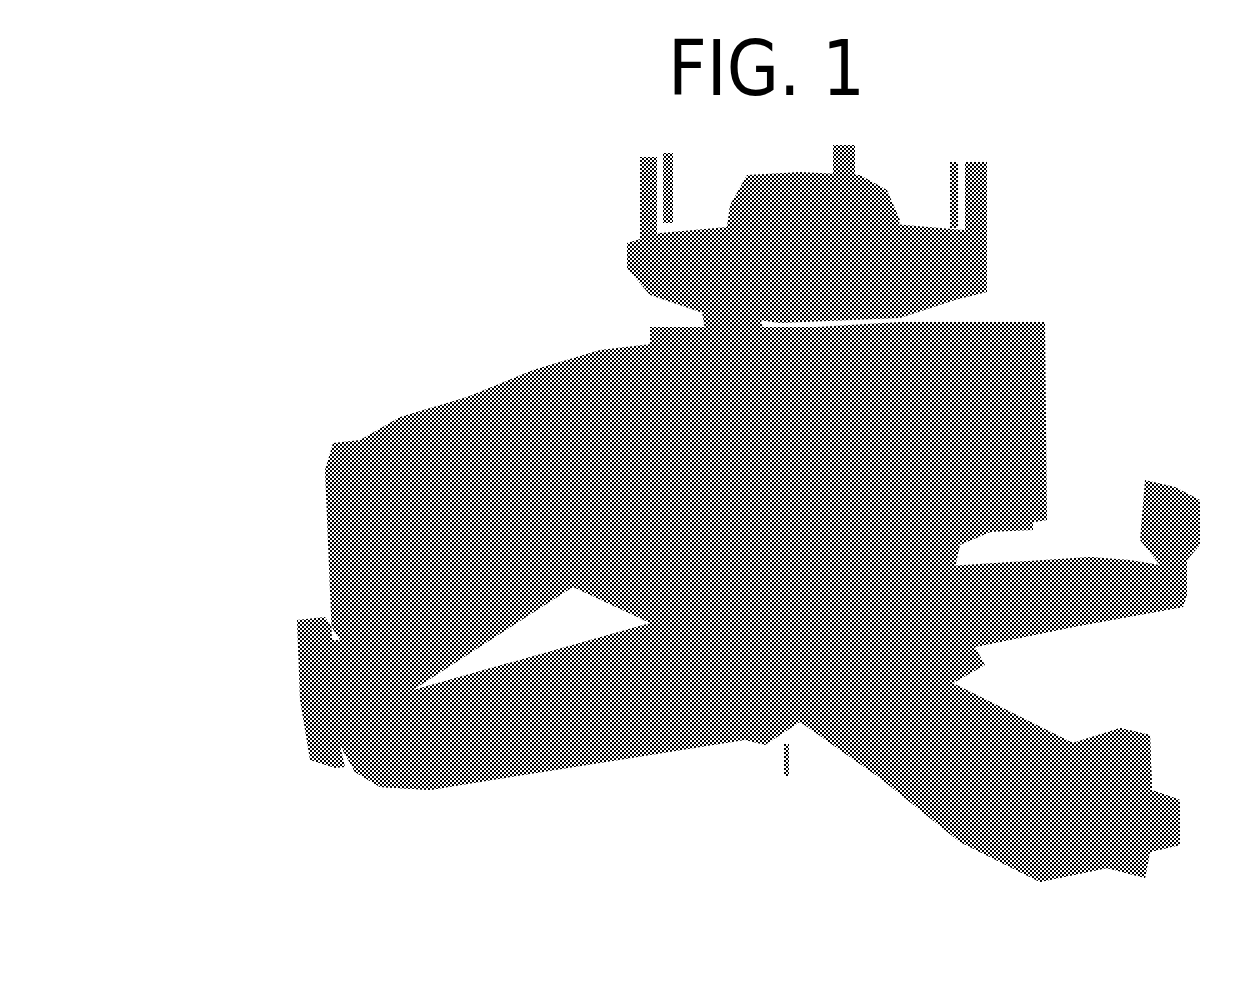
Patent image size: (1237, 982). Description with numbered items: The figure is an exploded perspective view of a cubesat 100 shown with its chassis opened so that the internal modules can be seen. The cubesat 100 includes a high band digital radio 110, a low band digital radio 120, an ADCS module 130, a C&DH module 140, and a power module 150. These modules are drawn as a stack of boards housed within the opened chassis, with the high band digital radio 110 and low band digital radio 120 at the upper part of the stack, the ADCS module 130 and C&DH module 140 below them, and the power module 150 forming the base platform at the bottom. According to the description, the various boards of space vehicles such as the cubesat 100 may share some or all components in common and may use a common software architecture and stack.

The cubesat 100 is at (282, 97).
The high band digital radio 110 is at (880, 388).
The low band digital radio 120 is at (885, 405).
The ADCS module 130 is at (925, 478).
The C&DH module 140 is at (935, 528).
The power module 150 is at (965, 657).